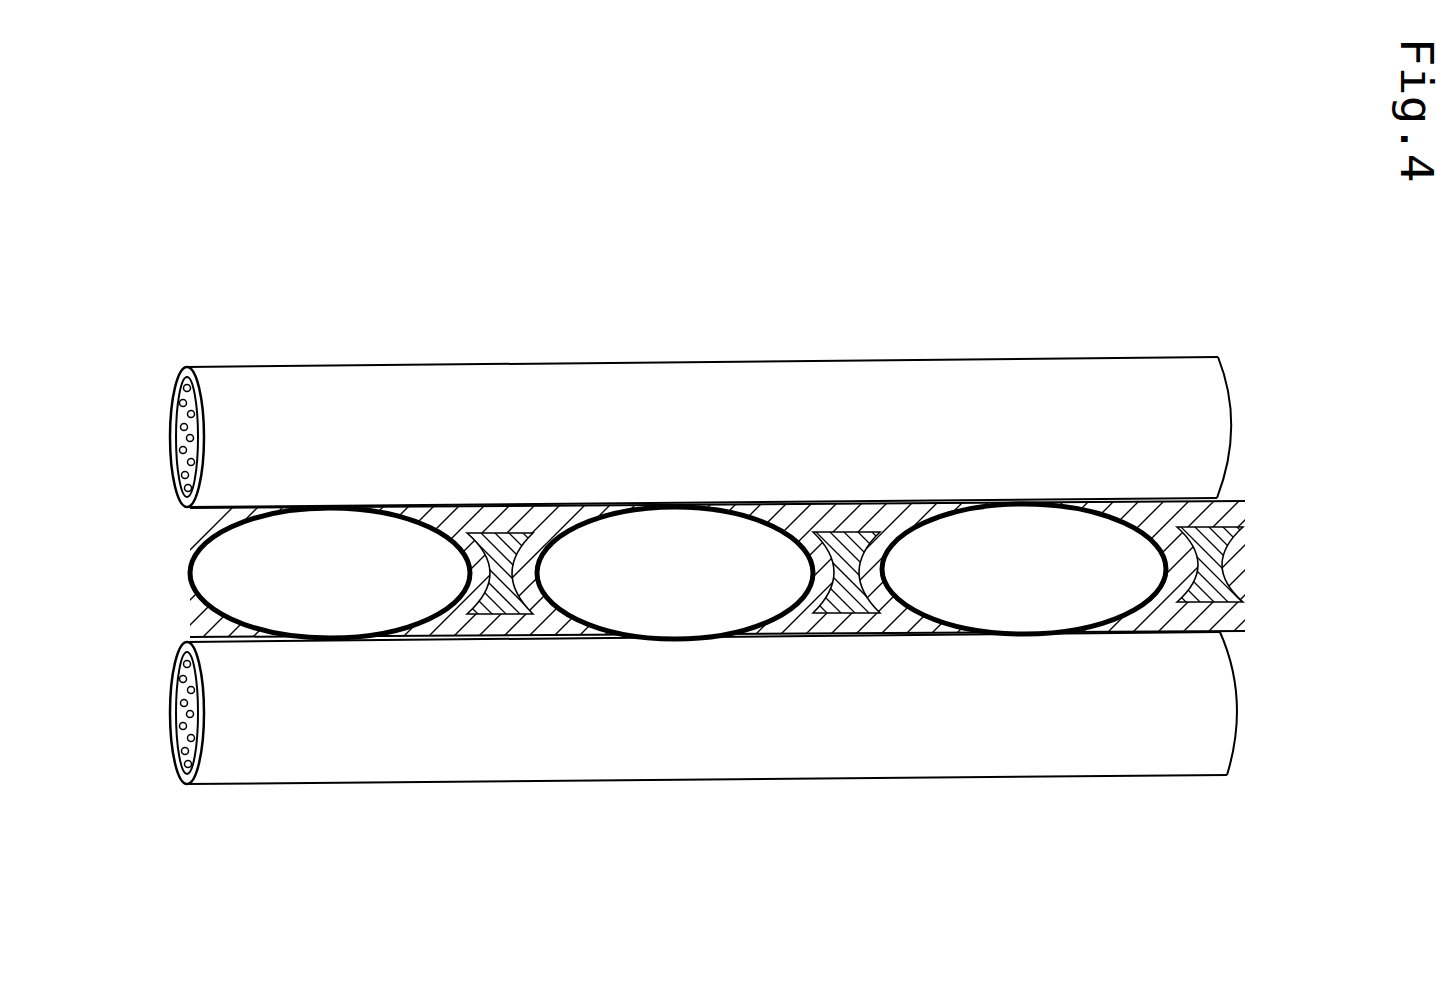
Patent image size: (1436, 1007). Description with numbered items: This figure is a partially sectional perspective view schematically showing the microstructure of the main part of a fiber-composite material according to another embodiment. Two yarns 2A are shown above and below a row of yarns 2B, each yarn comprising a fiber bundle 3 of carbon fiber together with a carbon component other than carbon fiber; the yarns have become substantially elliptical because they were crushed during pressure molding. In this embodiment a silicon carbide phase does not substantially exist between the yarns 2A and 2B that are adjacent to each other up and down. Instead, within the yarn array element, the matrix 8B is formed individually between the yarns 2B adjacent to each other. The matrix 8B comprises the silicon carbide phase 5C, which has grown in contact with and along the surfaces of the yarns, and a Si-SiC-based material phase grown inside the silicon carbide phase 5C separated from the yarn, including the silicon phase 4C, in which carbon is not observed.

The yarn 2A is at (767, 363).
The yarn 2B is at (188, 545).
The fiber bundle 3 is at (178, 430).
The silicon phase 4C is at (488, 637).
The silicon carbide phase 5C is at (541, 515).
The matrix 8B is at (497, 505).